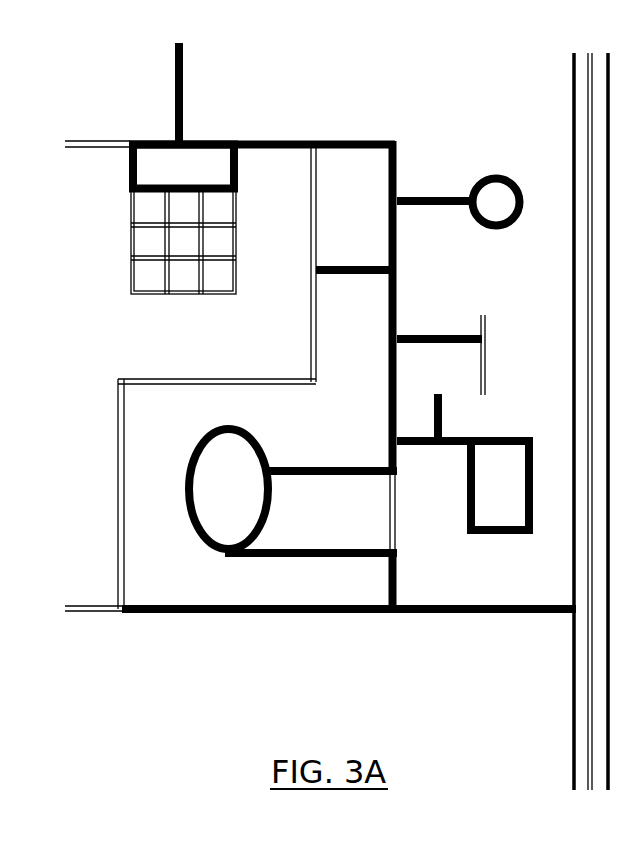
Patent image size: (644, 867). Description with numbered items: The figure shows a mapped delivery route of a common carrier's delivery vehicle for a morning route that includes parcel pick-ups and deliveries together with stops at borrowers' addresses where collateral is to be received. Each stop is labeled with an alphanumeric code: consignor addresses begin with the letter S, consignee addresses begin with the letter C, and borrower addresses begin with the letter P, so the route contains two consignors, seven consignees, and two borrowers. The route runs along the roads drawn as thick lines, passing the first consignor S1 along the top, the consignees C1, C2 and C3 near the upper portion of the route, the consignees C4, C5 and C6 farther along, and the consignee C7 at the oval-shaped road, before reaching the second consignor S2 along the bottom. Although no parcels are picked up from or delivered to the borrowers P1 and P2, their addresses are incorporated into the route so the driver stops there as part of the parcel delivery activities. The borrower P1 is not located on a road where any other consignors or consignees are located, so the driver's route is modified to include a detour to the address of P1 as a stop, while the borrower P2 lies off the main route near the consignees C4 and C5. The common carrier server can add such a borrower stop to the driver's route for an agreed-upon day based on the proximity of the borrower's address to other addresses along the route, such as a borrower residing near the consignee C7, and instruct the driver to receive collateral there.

The consignor address S1 is at (262, 94).
The consignor address S2 is at (349, 595).
The consignee address C1 is at (183, 220).
The consignee address C2 is at (458, 190).
The consignee address C3 is at (353, 258).
The consignee address C4 is at (516, 485).
The consignee address C5 is at (454, 485).
The consignee address C6 is at (331, 460).
The consignee address C7 is at (288, 484).
The borrower address P1 is at (441, 354).
The borrower address P2 is at (465, 417).